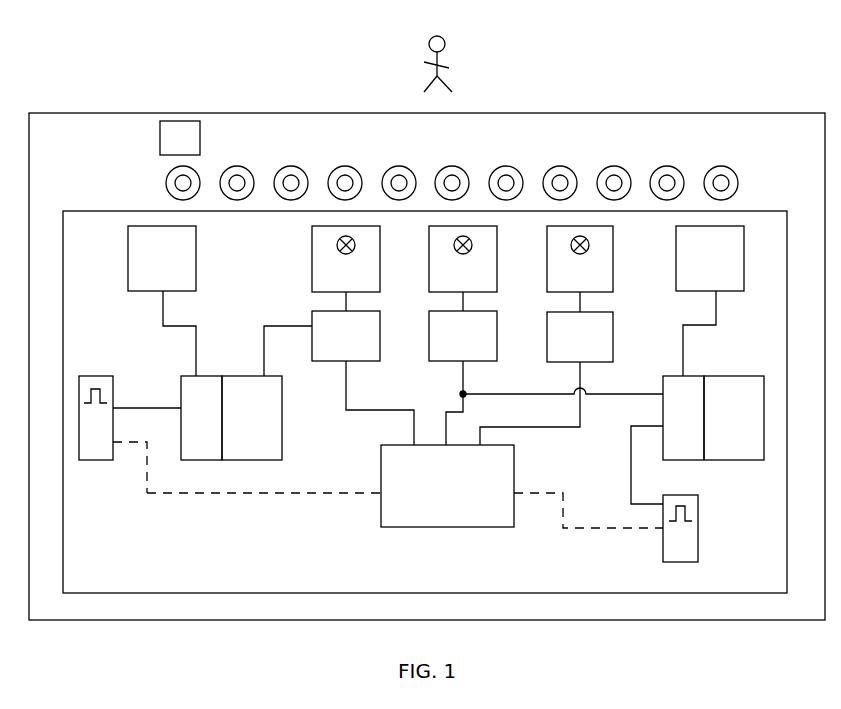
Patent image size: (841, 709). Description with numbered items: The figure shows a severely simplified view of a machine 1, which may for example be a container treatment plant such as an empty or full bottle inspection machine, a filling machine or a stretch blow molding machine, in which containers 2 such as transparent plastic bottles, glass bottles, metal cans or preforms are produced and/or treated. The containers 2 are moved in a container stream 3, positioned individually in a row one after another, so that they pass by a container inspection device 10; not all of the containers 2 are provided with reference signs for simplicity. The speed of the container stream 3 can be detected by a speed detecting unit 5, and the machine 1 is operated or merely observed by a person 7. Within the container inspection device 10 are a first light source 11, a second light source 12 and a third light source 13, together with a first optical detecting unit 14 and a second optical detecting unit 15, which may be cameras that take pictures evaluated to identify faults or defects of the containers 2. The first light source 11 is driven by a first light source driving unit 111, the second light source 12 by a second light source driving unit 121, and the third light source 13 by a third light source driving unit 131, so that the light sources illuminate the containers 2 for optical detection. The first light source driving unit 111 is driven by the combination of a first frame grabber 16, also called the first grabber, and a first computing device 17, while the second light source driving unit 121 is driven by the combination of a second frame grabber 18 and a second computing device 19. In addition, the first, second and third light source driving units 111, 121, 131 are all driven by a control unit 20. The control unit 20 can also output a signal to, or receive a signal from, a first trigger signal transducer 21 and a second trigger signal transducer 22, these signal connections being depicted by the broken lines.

The machine 1 is at (733, 112).
The containers 2 is at (240, 166).
The container stream 3 is at (424, 171).
The speed detecting unit 5 is at (186, 149).
The person 7 is at (448, 44).
The container inspection device 10 is at (561, 593).
The first light source 11 is at (357, 287).
The second light source 12 is at (474, 287).
The third light source 13 is at (591, 287).
The first optical detecting unit 14 is at (172, 272).
The second optical detecting unit 15 is at (720, 272).
The first frame grabber 16 is at (212, 428).
The first computing device 17 is at (258, 428).
The second frame grabber 18 is at (694, 428).
The second computing device 19 is at (740, 428).
The control unit 20 is at (458, 494).
The first trigger signal transducer 21 is at (106, 442).
The second trigger signal transducer 22 is at (692, 557).
The first light source driving unit 111 is at (363, 349).
The second light source driving unit 121 is at (479, 349).
The third light source driving unit 131 is at (596, 349).